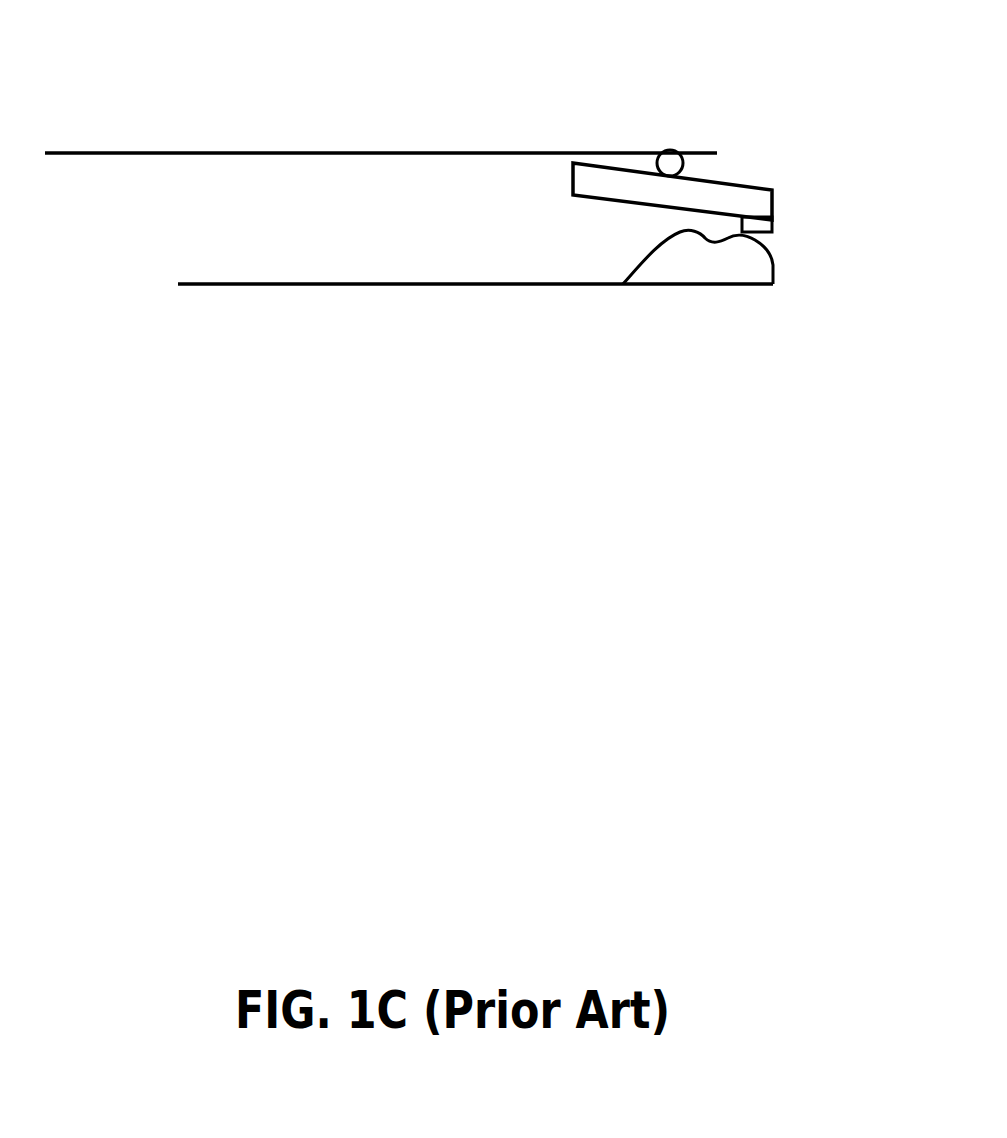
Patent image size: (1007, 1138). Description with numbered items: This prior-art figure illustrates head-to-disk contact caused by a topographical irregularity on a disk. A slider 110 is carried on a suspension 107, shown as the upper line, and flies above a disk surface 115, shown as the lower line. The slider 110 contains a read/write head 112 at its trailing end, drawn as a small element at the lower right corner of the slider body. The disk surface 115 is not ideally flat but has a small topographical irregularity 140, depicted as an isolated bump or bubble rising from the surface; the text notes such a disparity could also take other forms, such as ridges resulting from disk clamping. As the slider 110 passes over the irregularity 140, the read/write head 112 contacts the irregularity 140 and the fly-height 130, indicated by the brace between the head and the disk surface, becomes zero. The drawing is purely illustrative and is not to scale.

The suspension 107 is at (215, 140).
The slider 110 is at (720, 176).
The read/write head 112 is at (780, 226).
The disk surface 115 is at (318, 294).
The fly-height 130 is at (808, 212).
The topographical irregularity 140 is at (716, 268).